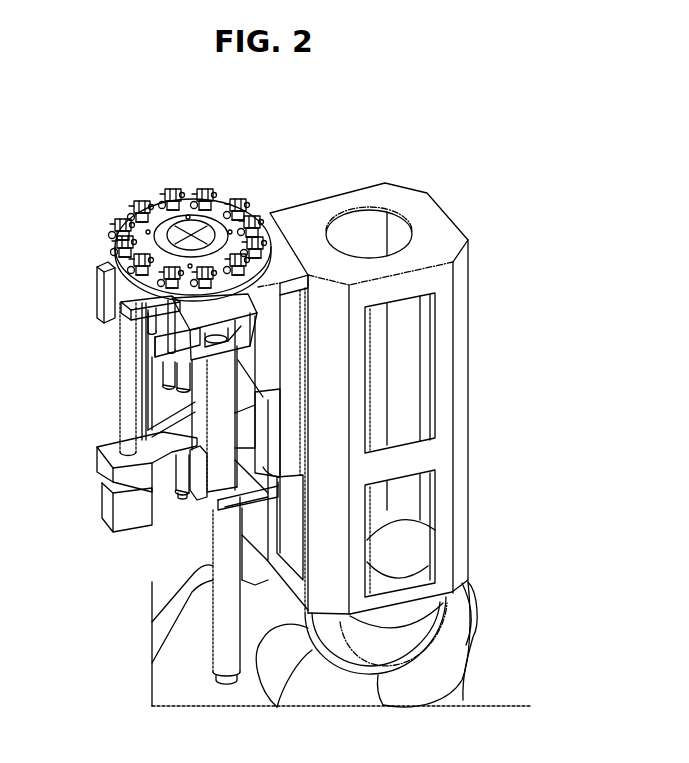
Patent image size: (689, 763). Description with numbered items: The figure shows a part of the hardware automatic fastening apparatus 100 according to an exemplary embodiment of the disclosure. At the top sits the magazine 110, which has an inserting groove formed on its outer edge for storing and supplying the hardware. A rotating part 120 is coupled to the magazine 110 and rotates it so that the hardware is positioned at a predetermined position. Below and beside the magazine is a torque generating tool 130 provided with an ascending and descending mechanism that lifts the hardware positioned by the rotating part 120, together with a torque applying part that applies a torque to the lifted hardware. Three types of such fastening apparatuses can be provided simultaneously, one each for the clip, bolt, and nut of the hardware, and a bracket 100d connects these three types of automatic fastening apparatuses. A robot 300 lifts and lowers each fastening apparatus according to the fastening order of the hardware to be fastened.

The tool changer device 100 is at (93, 112).
The magazine 110 is at (150, 199).
The rotating part 120 is at (190, 507).
The torque generating tool 130 is at (108, 385).
The bracket 100d is at (338, 183).
The robot 300 is at (475, 663).